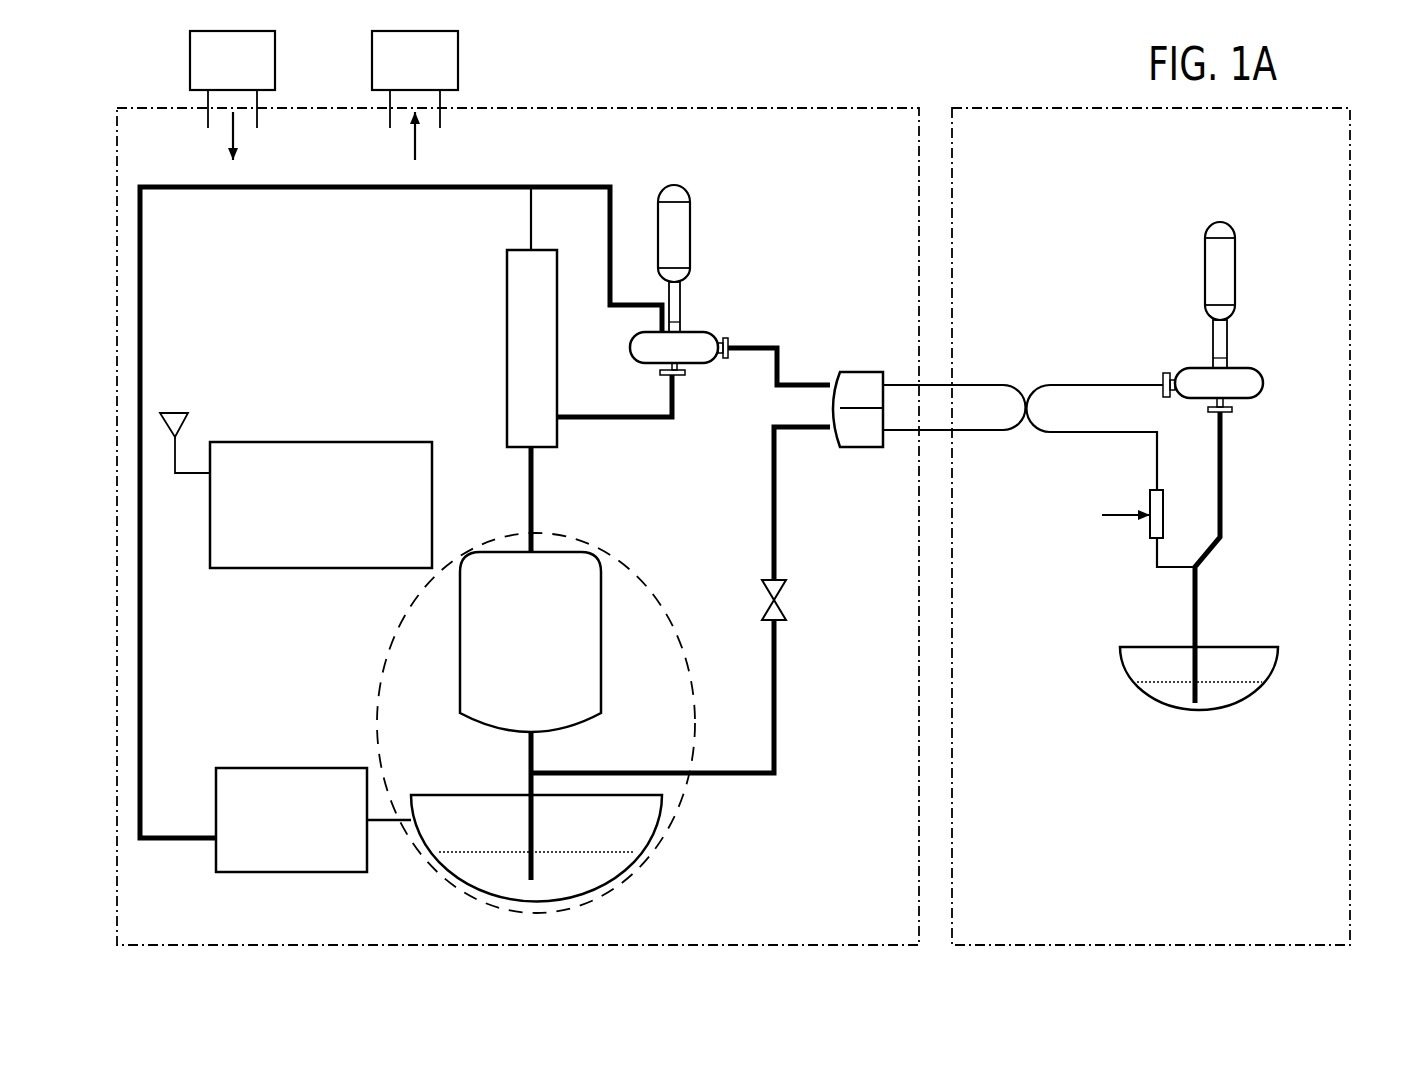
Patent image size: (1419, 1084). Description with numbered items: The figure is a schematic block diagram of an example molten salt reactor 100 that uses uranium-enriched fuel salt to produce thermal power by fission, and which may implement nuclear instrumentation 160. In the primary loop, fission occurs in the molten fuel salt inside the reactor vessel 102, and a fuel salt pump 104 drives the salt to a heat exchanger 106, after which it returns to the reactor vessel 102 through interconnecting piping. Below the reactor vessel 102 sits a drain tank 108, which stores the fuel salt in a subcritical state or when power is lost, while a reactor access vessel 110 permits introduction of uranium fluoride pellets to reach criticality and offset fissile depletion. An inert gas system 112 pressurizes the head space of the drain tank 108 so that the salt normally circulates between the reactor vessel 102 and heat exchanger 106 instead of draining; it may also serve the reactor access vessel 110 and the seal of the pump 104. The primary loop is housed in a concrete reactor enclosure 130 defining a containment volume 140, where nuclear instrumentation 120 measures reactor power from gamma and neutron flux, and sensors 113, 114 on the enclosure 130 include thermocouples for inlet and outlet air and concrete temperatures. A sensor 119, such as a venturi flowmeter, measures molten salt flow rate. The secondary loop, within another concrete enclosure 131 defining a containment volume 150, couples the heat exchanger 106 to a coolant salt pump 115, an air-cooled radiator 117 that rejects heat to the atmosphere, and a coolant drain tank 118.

The molten salt reactor 100 is at (910, 82).
The reactor vessel 102 is at (477, 647).
The fuel salt pump 104 is at (697, 338).
The heat exchanger 106 is at (964, 405).
The drain tank 108 is at (634, 818).
The reactor access vessel 110 is at (518, 352).
The inert gas system 112 is at (243, 768).
The sensor 113 is at (252, 68).
The sensor 114 is at (434, 68).
The coolant salt pump 115 is at (1197, 377).
The air-cooled radiator 117 is at (1147, 527).
The coolant drain tank 118 is at (1247, 698).
The sensor 119 is at (777, 590).
The nuclear instrumentation 120 is at (290, 442).
The reactor enclosure 130 is at (920, 630).
The reactor enclosure 131 is at (1352, 622).
The containment volume 140 is at (815, 172).
The containment volume 150 is at (1155, 172).
The nuclear instrumentation 160 is at (647, 567).